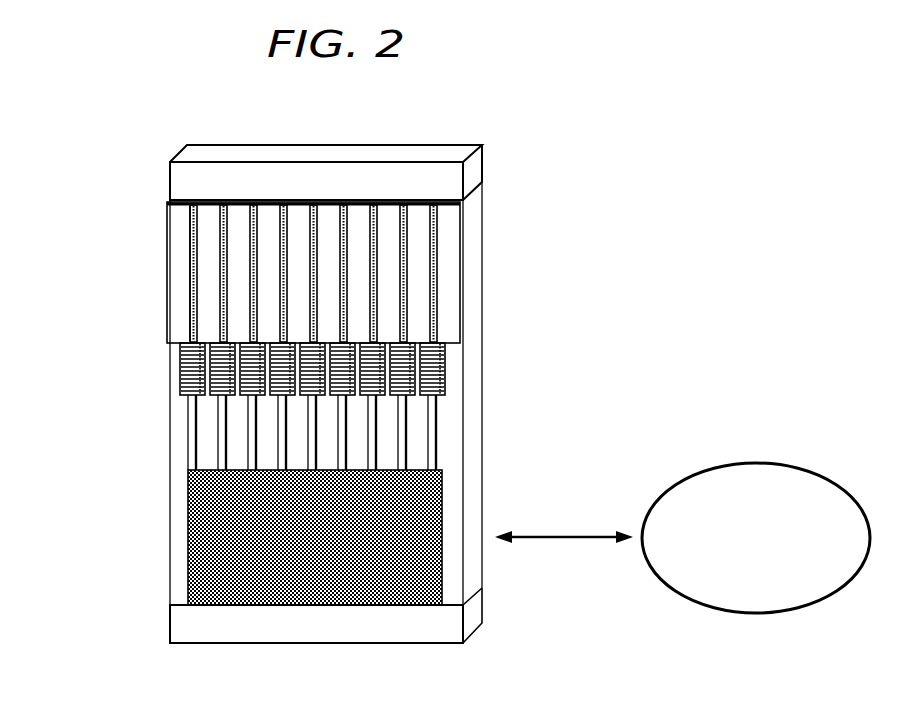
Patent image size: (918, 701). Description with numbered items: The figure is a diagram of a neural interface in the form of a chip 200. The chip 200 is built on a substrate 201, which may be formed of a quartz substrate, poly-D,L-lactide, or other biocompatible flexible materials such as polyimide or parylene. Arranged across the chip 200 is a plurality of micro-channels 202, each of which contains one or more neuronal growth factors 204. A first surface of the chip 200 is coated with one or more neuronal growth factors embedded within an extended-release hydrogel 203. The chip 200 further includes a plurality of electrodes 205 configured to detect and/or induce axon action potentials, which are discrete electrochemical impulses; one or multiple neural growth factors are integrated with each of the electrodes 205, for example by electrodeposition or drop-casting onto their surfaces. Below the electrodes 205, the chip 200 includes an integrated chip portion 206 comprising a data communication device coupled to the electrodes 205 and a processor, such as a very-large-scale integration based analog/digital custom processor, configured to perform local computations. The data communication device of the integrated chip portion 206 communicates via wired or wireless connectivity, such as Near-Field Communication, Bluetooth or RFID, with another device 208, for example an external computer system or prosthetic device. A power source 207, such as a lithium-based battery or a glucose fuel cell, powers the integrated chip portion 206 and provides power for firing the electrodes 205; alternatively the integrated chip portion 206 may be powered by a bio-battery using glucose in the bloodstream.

The chip 200 is at (130, 152).
The substrate 201 is at (473, 278).
The micro-channels 202 is at (188, 238).
The extended-release hydrogel 203 is at (473, 170).
The neuronal growth factors 204 is at (184, 278).
The electrodes 205 is at (447, 370).
The integrated chip portion 206 is at (188, 513).
The power source 207 is at (483, 615).
The device 208 is at (790, 465).